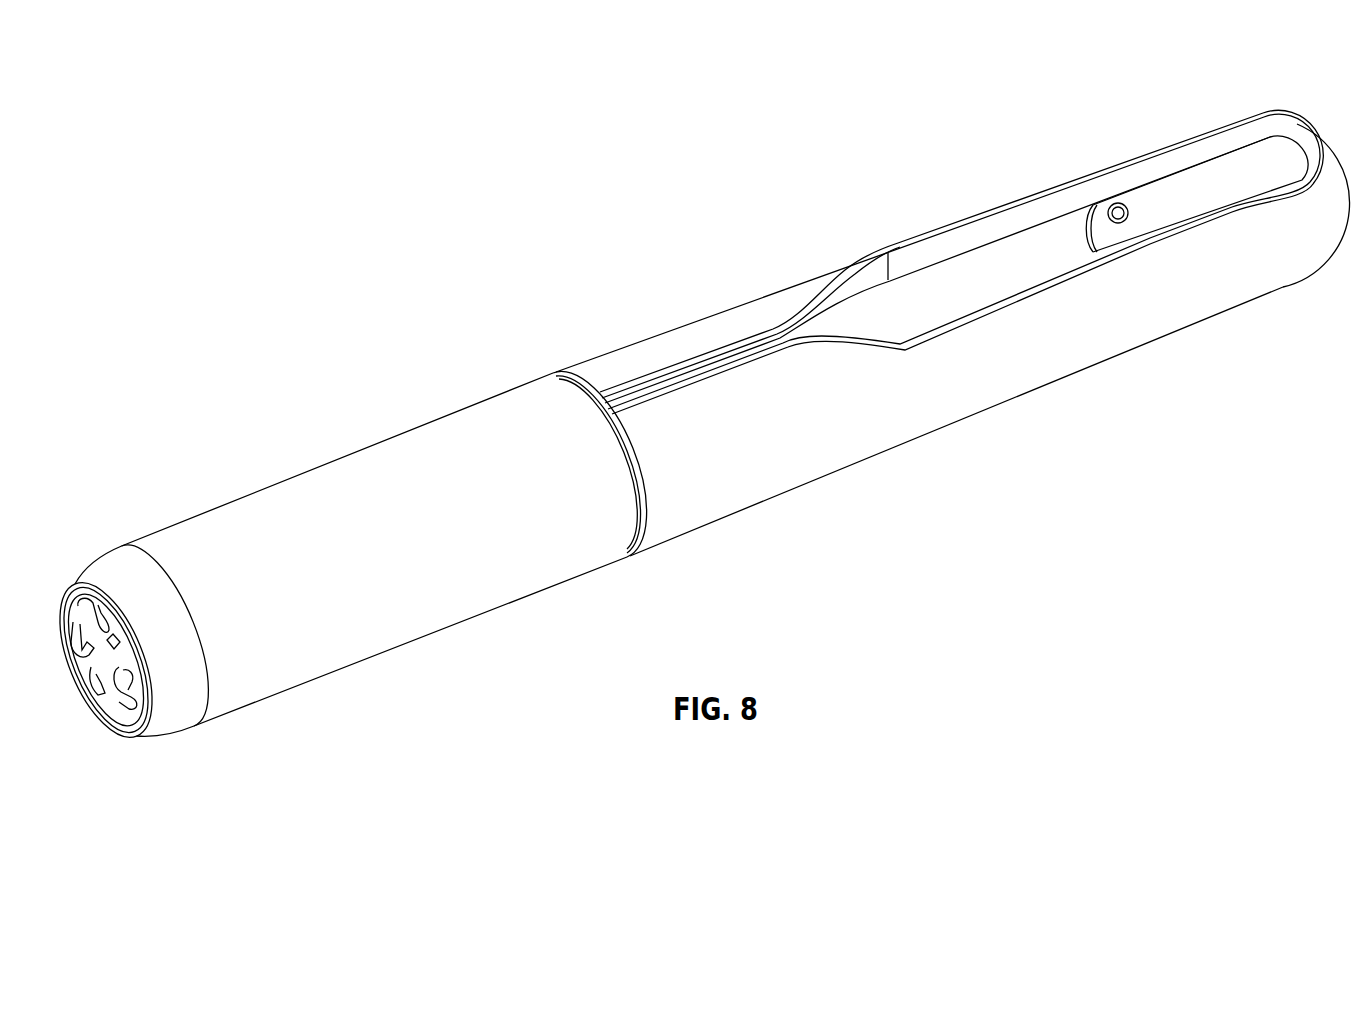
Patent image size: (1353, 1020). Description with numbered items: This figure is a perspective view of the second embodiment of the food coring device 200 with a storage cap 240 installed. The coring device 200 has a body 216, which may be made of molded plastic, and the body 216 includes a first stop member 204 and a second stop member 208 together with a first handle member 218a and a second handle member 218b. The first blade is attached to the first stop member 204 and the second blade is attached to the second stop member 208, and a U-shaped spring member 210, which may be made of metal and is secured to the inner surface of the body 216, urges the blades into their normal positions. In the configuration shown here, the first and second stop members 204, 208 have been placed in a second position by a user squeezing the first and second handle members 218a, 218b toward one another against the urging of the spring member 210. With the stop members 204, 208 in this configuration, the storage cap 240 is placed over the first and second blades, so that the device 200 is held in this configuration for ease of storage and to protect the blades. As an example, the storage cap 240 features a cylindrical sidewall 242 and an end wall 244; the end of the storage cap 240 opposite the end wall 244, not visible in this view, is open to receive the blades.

The coring device 200 is at (150, 209).
The first stop member 204 is at (673, 351).
The second stop member 208 is at (770, 427).
The spring member 210 is at (1184, 187).
The body 216 is at (898, 210).
The first handle member 218a is at (987, 207).
The second handle member 218b is at (1098, 339).
The storage cap 240 is at (302, 415).
The cylindrical sidewall 242 is at (378, 622).
The end wall 244 is at (109, 702).